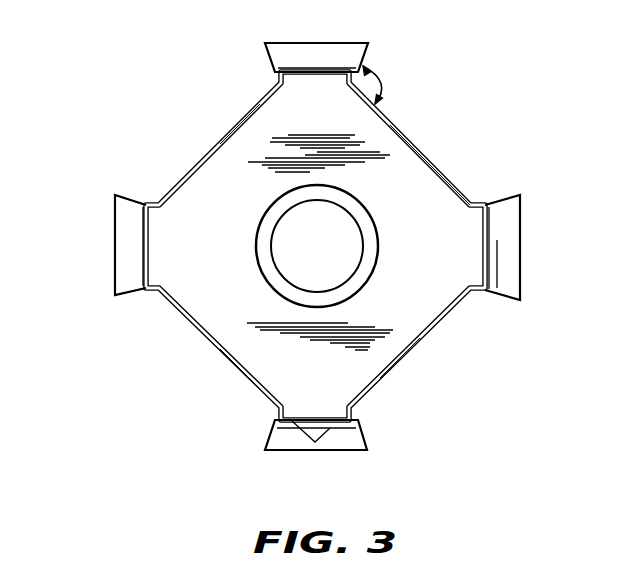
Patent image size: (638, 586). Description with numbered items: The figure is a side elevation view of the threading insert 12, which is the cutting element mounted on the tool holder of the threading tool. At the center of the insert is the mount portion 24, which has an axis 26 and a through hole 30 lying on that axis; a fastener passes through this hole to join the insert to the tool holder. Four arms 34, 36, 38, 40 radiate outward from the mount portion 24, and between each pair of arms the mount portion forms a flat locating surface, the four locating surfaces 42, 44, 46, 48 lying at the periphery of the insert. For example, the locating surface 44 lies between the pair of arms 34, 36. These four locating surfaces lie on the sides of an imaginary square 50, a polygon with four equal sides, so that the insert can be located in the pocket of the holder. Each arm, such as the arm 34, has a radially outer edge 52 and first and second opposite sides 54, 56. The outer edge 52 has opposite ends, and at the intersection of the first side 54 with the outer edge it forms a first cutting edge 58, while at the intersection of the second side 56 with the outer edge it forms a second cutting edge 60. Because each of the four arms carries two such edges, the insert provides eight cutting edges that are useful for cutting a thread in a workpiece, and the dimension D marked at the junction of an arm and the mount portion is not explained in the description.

The threading insert 12 is at (413, 140).
The mount portion 24 is at (425, 162).
The axis 26 is at (317, 248).
The through hole 30 is at (342, 210).
The arm 34 is at (108, 250).
The arm 36 is at (264, 440).
The arm 38 is at (507, 200).
The arm 40 is at (365, 56).
The flat locating surface 42 is at (232, 135).
The flat locating surface 44 is at (252, 383).
The flat locating surface 46 is at (422, 335).
The flat locating surface 48 is at (450, 190).
The imaginary square 50 is at (330, 430).
The radially outer edge 52 is at (115, 290).
The first side 54 is at (125, 197).
The second side 56 is at (140, 292).
The first cutting edge 58 is at (115, 196).
The second cutting edge 60 is at (112, 298).
The dimension D is at (382, 83).